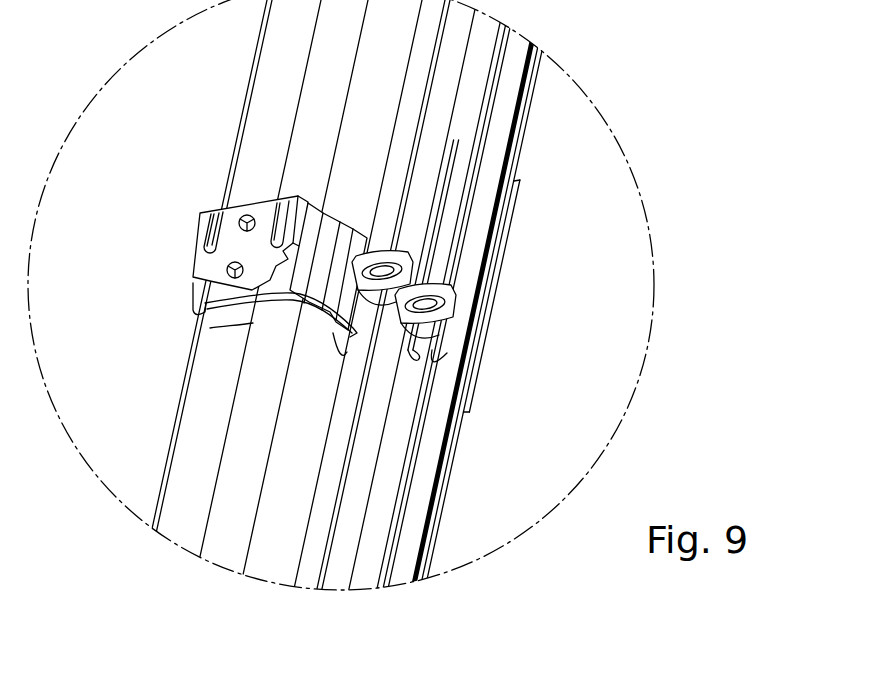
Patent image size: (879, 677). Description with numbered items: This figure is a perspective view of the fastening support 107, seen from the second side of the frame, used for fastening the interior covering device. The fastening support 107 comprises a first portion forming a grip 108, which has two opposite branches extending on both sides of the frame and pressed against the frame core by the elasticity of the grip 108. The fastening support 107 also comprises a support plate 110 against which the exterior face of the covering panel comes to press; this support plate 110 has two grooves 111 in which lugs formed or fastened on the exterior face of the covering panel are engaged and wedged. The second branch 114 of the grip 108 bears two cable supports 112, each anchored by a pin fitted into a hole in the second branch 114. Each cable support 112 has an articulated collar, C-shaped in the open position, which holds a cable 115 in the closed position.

The fastening support 107 is at (158, 226).
The grip 108 is at (283, 295).
The support plate 110 is at (233, 242).
The grooves 111 is at (283, 208).
The cable support 112 is at (398, 267).
The second branch 114 is at (333, 320).
The cable 115 is at (420, 113).